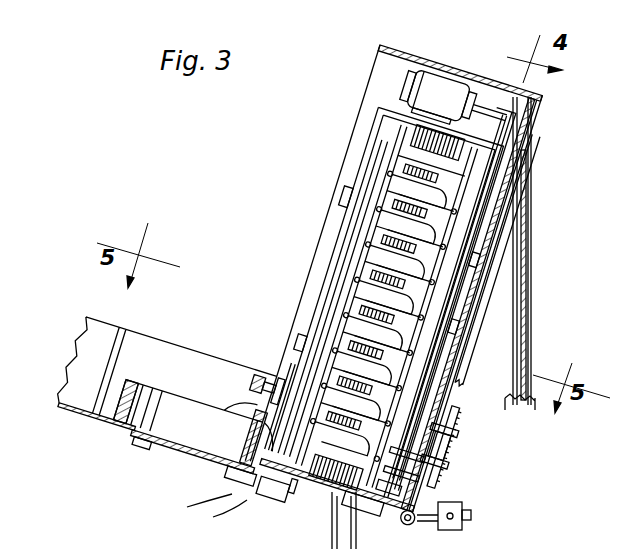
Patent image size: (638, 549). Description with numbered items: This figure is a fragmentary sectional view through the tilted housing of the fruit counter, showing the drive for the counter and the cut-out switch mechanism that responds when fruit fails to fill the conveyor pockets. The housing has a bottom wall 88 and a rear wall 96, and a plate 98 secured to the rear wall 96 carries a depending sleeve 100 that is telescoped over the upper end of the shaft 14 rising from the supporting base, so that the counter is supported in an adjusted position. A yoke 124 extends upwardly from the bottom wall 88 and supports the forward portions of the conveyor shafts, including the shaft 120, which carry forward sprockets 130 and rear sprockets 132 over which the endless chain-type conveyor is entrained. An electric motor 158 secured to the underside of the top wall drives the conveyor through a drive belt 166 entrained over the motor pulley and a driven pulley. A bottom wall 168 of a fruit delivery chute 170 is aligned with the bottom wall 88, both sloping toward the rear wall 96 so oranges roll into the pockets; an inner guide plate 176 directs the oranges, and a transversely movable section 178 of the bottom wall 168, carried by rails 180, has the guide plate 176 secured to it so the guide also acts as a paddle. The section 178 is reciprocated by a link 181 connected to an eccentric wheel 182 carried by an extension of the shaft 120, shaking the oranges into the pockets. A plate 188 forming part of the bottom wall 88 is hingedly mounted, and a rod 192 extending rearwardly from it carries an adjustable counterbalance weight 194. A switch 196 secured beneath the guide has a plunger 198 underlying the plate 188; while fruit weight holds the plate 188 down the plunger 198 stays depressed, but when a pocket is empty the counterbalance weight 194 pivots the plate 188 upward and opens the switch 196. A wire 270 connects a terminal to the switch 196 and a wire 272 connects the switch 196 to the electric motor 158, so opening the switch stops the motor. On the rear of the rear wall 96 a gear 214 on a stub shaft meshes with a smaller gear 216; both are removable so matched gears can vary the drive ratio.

The electric motor 158 is at (445, 88).
The yoke 124 is at (372, 134).
The drive belt 166 is at (493, 162).
The plate 98 is at (508, 197).
The forward sprockets 130 is at (267, 420).
The rear sprockets 132 is at (420, 487).
The sleeve 100 is at (518, 295).
The rear wall 96 is at (447, 378).
The shaft 14 is at (513, 422).
The gear 214 is at (447, 453).
The gear 216 is at (440, 476).
The counterbalance weight 194 is at (462, 510).
The rod 192 is at (468, 522).
The fruit delivery chute 170 is at (98, 338).
The bottom wall 168 is at (78, 412).
The inner guide plate 176 is at (158, 405).
The transversely movable section 178 is at (175, 450).
The rails 180 is at (233, 468).
The link 181 is at (260, 370).
The eccentric wheel 182 is at (273, 372).
The shaft 120 is at (285, 368).
The wire 270 is at (187, 510).
The wire 272 is at (213, 520).
The switch 196 is at (257, 500).
The plunger 198 is at (278, 480).
The bottom wall 88 is at (307, 500).
The plate 188 is at (327, 495).